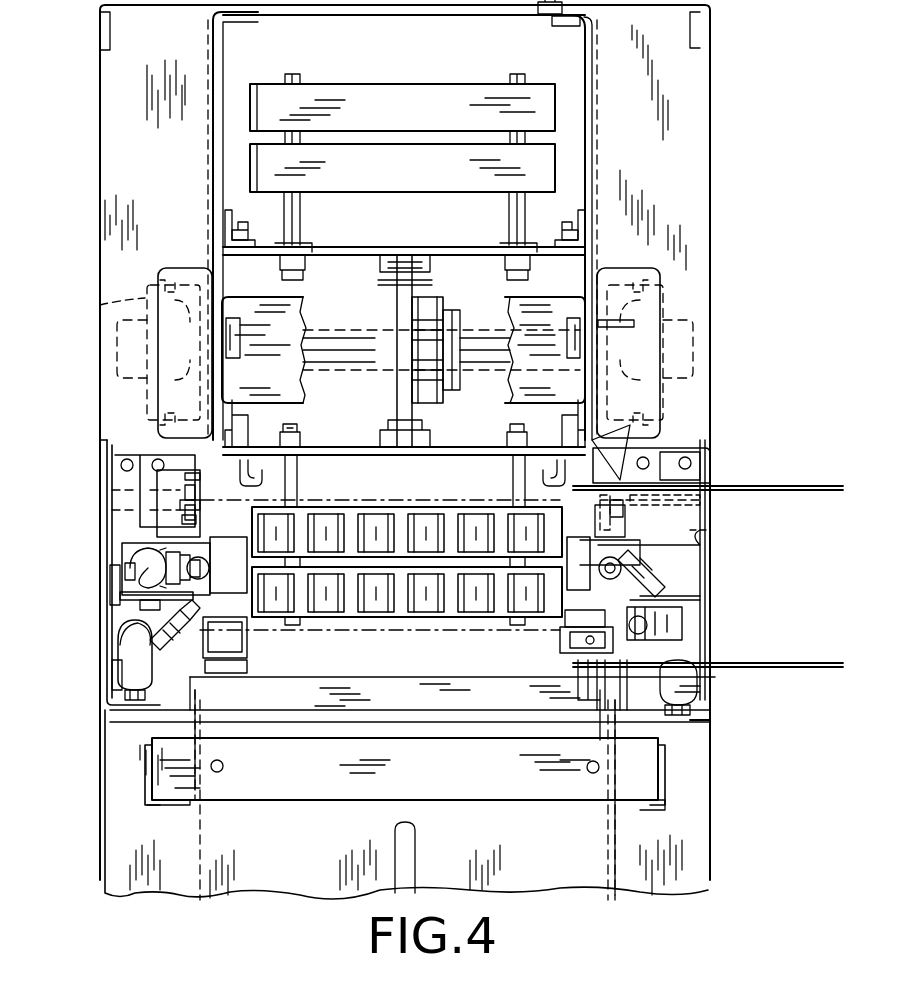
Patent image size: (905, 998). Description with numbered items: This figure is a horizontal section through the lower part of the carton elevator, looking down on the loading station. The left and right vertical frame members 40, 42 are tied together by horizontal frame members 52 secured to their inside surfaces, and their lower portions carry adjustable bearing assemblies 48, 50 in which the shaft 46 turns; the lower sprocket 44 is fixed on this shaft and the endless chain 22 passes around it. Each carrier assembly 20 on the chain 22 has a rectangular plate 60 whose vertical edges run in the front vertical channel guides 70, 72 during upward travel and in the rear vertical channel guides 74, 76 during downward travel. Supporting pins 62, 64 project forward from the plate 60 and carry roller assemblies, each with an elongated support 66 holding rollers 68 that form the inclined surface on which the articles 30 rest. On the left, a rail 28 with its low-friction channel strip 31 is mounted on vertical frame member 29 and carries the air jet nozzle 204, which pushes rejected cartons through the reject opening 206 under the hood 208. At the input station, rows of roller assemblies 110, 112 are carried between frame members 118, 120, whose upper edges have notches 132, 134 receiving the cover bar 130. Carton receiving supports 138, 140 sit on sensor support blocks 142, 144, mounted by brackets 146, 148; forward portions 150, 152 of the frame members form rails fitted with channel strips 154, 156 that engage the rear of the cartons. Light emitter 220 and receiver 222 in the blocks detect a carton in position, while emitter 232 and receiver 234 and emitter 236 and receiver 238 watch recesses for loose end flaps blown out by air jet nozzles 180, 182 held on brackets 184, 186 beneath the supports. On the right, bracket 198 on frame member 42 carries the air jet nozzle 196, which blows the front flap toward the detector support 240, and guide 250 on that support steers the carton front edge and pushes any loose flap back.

The carrier assembly 20 is at (447, 640).
The chain 22 is at (395, 280).
The rail 28 is at (125, 597).
The vertical frame member 29 is at (105, 692).
The article 30 is at (455, 630).
The channel strip 31 is at (122, 630).
The vertical frame member 40 is at (220, 72).
The vertical frame member 42 is at (595, 46).
The sprocket 44 is at (440, 388).
The shaft 46 is at (345, 346).
The adjustable bearing assembly 48 is at (145, 300).
The adjustable bearing assembly 50 is at (665, 300).
The horizontal frame member 52 is at (298, 308).
The rectangular plate 60 is at (352, 248).
The supporting pin 62 is at (300, 490).
The supporting pin 64 is at (512, 476).
The elongated support 66 is at (322, 600).
The roller 68 is at (268, 600).
The front vertical channel guide 70 is at (280, 443).
The front vertical channel guide 72 is at (548, 446).
The rear vertical channel guide 74 is at (250, 242).
The rear vertical channel guide 76 is at (550, 242).
The roller assembly 110 is at (244, 663).
The roller assembly 112 is at (580, 670).
The frame member 118 is at (108, 860).
The frame member 120 is at (697, 848).
The bar 130 is at (448, 785).
The notch 132 is at (160, 802).
The notch 134 is at (665, 800).
The carton receiving support 138 is at (236, 542).
The carton receiving support 140 is at (600, 558).
The sensor support block 142 is at (140, 470).
The sensor support block 144 is at (692, 466).
The bracket 146 is at (148, 468).
The bracket 148 is at (660, 460).
The forward portion 150 is at (262, 488).
The forward portion 152 is at (543, 488).
The channel strip 154 is at (238, 446).
The channel strip 156 is at (622, 448).
The air jet nozzle 180 is at (217, 565).
The air jet nozzle 182 is at (640, 580).
The bracket 184 is at (185, 625).
The bracket 186 is at (702, 606).
The air jet nozzle 196 is at (690, 640).
The bracket 198 is at (647, 687).
The air jet nozzle 204 is at (135, 575).
The reject opening 206 is at (712, 537).
The hood 208 is at (788, 485).
The light emitter 220 is at (676, 512).
The light receiver 222 is at (108, 520).
The light emitter 232 is at (190, 525).
The light receiver 234 is at (110, 497).
The light emitter 236 is at (706, 548).
The light receiver 238 is at (631, 514).
The detector support 240 is at (598, 690).
The guide 250 is at (565, 645).